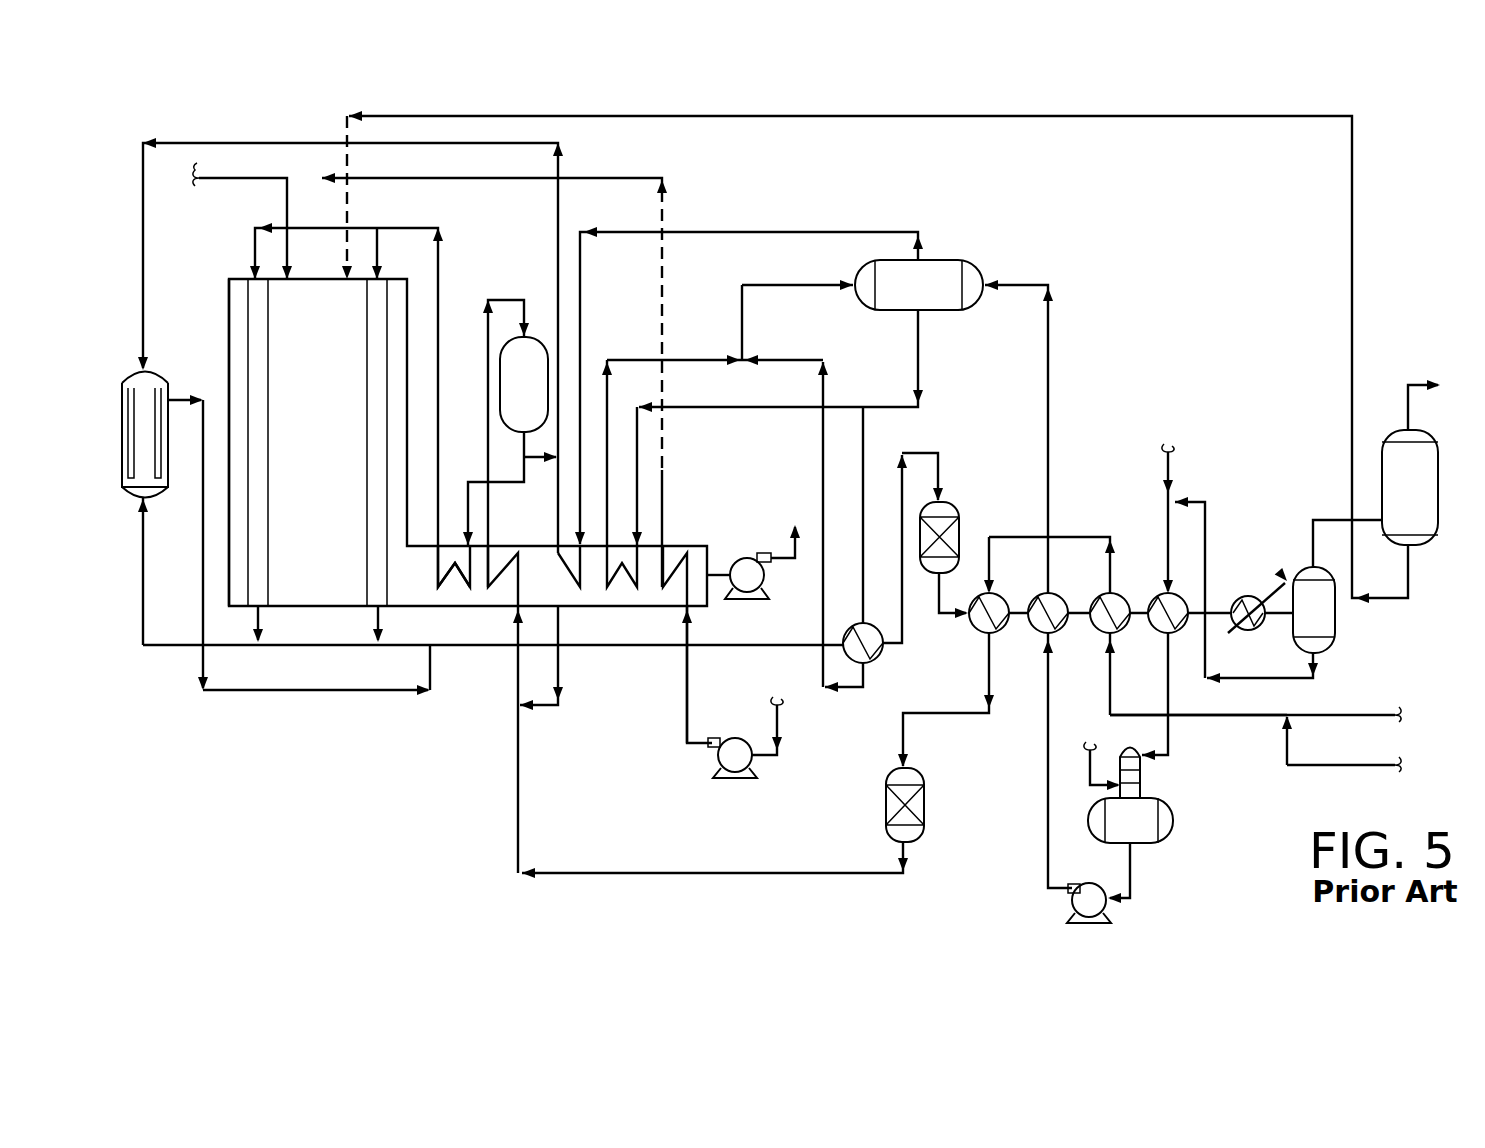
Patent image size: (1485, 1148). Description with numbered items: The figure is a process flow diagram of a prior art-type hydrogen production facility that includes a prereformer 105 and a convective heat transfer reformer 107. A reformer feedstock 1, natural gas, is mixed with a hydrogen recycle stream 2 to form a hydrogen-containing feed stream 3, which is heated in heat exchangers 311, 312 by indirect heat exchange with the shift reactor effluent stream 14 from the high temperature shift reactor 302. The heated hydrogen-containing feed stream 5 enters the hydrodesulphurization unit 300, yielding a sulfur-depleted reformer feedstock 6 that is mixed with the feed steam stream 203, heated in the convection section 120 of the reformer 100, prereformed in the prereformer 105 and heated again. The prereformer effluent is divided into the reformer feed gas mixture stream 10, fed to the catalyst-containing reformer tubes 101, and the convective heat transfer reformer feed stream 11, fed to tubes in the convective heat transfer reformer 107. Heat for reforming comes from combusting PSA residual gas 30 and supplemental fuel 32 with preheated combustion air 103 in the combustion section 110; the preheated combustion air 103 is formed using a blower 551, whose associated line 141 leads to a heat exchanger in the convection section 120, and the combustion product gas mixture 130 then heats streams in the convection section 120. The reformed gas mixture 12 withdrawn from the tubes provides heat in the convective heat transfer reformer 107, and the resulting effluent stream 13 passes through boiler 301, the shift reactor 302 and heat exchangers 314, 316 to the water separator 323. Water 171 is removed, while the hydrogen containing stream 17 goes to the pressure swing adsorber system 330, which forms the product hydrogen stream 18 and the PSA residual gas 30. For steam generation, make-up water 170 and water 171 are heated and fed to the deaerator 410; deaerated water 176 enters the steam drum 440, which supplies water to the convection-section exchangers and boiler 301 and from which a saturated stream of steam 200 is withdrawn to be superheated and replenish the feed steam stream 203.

The reformer feedstock 1 is at (1335, 715).
The hydrogen recycle stream 2 is at (1330, 765).
The hydrogen-containing feed stream 3 is at (1240, 715).
The heated hydrogen-containing feed stream 5 is at (945, 713).
The sulfur-depleted reformer feedstock 6 is at (603, 873).
The reformer feed gas mixture stream 10 is at (440, 305).
The convective heat transfer reformer feed stream 11 is at (197, 143).
The reformed gas mixture 12 is at (162, 645).
The effluent stream 13 is at (303, 690).
The shift reactor effluent stream 14 is at (938, 585).
The hydrogen containing stream 17 is at (1335, 520).
The product hydrogen stream 18 is at (1408, 412).
The PSA residual gas 30 is at (828, 116).
The supplemental fuel 32 is at (240, 178).
The reformer 100 is at (238, 284).
The catalyst-containing reformer tubes 101 is at (248, 349).
The preheated combustion air 103 is at (418, 178).
The prereformer 105 is at (506, 394).
The convective heat transfer reformer 107 is at (168, 470).
The combustion section 110 is at (296, 423).
The convection section 120 is at (507, 546).
The combustion product gas mixture 130 is at (396, 560).
The pump suction line 141 is at (687, 719).
The make-up water 170 is at (1168, 466).
The water 171 is at (1302, 678).
The water 176 is at (1048, 380).
The saturated stream of steam 200 is at (728, 232).
The feed steam stream 203 is at (542, 705).
The hydrodesulphurization unit 300 is at (924, 790).
The heat exchanger 301 is at (872, 662).
The high temperature shift reactor 302 is at (959, 510).
The heat exchanger 311 is at (980, 630).
The heat exchanger 312 is at (1125, 630).
The heat exchanger 314 is at (1040, 596).
The heat exchanger 316 is at (1160, 580).
The water separator 323 is at (1335, 622).
The pressure swing adsorber system 330 is at (1420, 541).
The deaerator 410 is at (1173, 822).
The steam drum 440 is at (897, 298).
The compressor or blower 551 is at (738, 775).